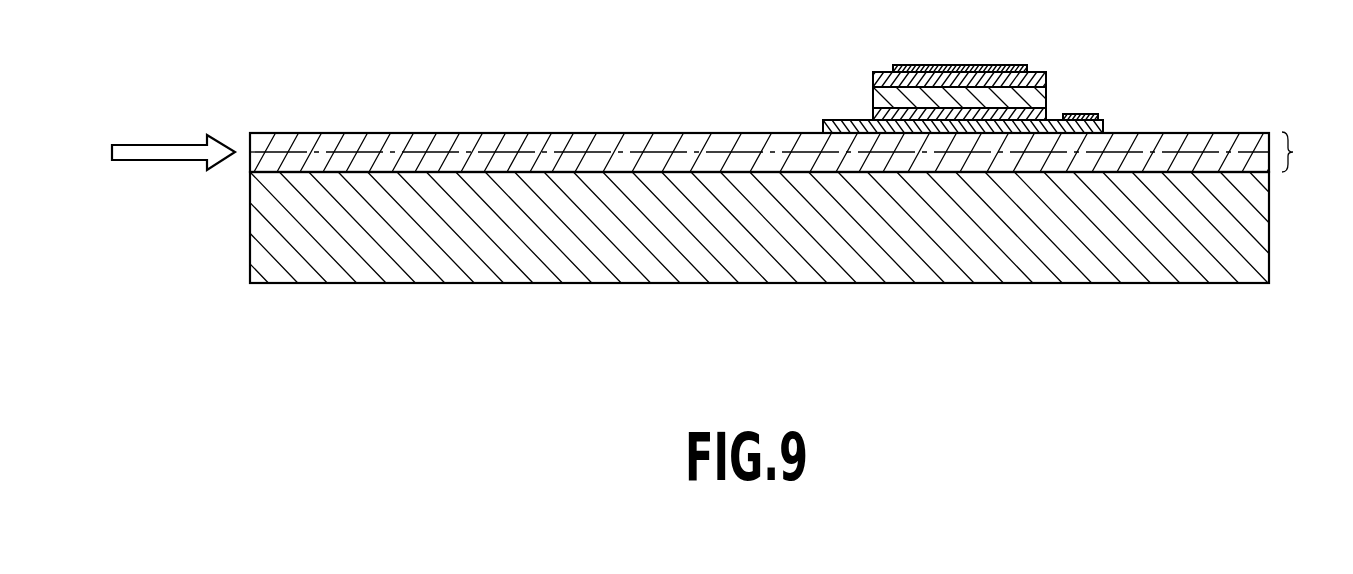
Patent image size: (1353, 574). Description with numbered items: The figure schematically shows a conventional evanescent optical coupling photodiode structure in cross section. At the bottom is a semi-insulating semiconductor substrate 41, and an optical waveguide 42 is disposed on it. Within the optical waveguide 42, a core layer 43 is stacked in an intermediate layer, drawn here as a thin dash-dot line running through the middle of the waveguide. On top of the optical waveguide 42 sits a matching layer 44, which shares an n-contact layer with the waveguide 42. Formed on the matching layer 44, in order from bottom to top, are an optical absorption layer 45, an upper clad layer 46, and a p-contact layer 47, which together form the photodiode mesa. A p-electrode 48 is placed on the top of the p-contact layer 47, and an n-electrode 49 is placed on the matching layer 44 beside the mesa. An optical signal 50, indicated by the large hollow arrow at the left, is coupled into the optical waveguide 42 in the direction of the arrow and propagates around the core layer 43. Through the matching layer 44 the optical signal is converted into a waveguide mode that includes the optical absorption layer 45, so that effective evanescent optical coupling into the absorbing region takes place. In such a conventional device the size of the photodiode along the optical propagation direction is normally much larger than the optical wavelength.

The semi-insulating semiconductor substrate 41 is at (458, 275).
The optical waveguide 42 is at (1305, 152).
The core layer 43 is at (448, 147).
The matching layer 44 is at (822, 131).
The optical absorption layer 45 is at (873, 115).
The upper clad layer 46 is at (873, 97).
The p-contact layer 47 is at (875, 72).
The p-electrode 48 is at (958, 65).
The n-electrode 49 is at (1082, 114).
The optical signal 50 is at (168, 145).